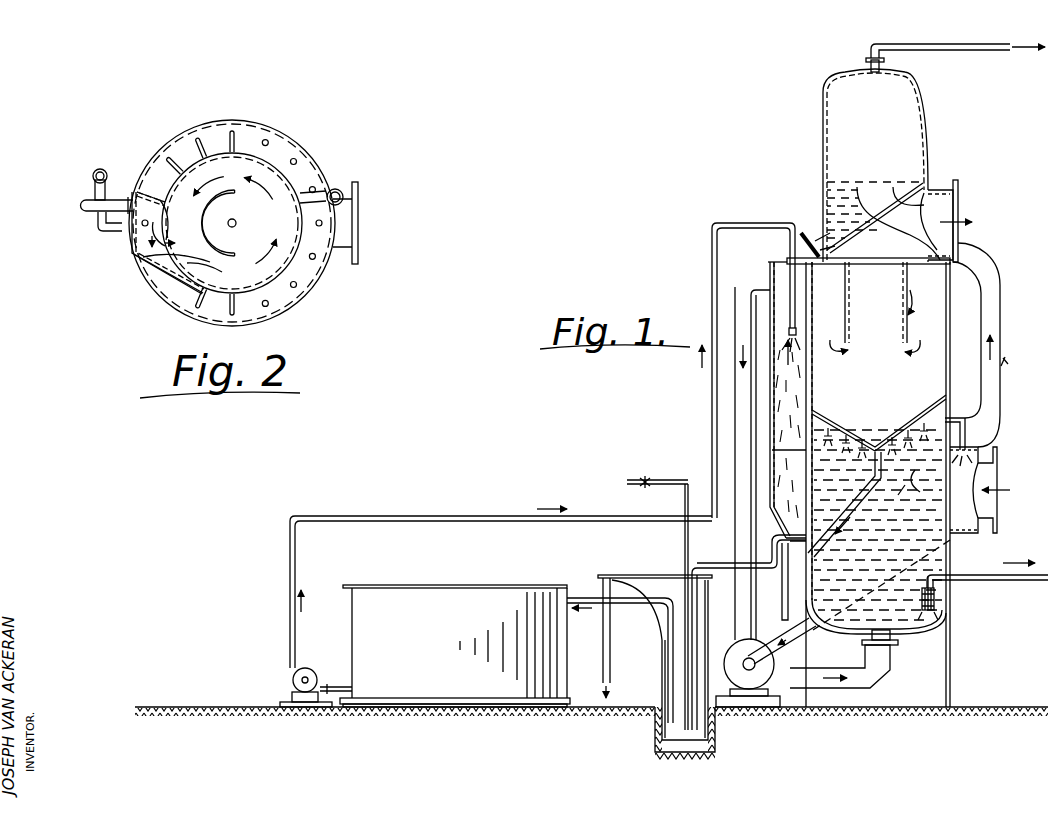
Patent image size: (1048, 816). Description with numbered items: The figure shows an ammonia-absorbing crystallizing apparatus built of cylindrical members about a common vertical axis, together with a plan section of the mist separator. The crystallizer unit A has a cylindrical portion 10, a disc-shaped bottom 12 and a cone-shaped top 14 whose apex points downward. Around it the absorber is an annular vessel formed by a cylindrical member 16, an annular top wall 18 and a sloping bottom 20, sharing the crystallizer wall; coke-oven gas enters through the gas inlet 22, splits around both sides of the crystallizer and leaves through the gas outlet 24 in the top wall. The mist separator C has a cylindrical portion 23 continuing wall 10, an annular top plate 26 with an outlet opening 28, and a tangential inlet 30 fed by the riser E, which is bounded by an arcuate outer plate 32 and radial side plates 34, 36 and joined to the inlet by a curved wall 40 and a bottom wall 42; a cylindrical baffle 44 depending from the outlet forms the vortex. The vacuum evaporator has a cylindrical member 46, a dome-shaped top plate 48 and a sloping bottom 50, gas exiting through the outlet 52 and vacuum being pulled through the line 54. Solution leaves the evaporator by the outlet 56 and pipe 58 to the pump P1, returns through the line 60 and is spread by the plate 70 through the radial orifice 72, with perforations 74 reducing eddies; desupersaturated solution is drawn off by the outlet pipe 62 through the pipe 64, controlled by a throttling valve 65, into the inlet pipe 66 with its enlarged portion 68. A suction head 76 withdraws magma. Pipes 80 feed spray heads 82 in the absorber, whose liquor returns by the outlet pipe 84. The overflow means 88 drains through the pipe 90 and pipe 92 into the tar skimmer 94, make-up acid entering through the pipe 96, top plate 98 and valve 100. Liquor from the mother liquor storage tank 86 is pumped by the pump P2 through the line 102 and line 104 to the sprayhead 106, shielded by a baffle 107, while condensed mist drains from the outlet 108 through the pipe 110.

In FIG. 1, the cylindrical portion 10 is at (936, 598).
In FIG. 1, the disc-shaped bottom 12 is at (950, 638).
In FIG. 1, the cone-shaped top 14 is at (847, 424).
In FIG. 1, the cylindrical member 16 is at (770, 480).
In FIG. 2, the annular top wall 18 is at (283, 145).
In FIG. 1, the annular top wall 18 is at (988, 447).
In FIG. 1, the sloping bottom 20 is at (822, 630).
In FIG. 2, the gas inlet 22 is at (345, 223).
In FIG. 1, the gas inlet 22 is at (985, 480).
In FIG. 1, the cylindrical portion 23 is at (944, 362).
In FIG. 2, the gas outlet 24 is at (143, 203).
In FIG. 1, the gas outlet 24 is at (800, 312).
In FIG. 1, the annular top plate 26 is at (878, 302).
In FIG. 1, the outlet opening 28 is at (1012, 580).
In FIG. 2, the tangential inlet 30 is at (205, 266).
In FIG. 2, the arcuate outer plate 32 is at (132, 236).
In FIG. 1, the arcuate outer plate 32 is at (788, 416).
In FIG. 2, the radial side plate 34 is at (162, 198).
In FIG. 2, the radial side plate 36 is at (168, 233).
In FIG. 2, the curved wall 40 is at (160, 278).
In FIG. 2, the bottom wall 42 is at (150, 256).
In FIG. 2, the cylindrical baffle 44 is at (222, 208).
In FIG. 1, the cylindrical baffle 44 is at (884, 351).
In FIG. 1, the cylindrical member 46 is at (930, 150).
In FIG. 1, the top plate 48 is at (845, 82).
In FIG. 1, the sloping bottom 50 is at (859, 250).
In FIG. 1, the outlet 52 is at (960, 205).
In FIG. 1, the line 54 is at (965, 50).
In FIG. 1, the outlet 56 is at (810, 240).
In FIG. 2, the pipe 58 is at (93, 173).
In FIG. 1, the pipe 58 is at (712, 396).
In FIG. 1, the line 60 is at (838, 690).
In FIG. 1, the outlet pipe 62 is at (935, 402).
In FIG. 1, the pipe 64 is at (1002, 303).
In FIG. 1, the throttling valve 65 is at (1003, 360).
In FIG. 1, the inlet pipe 66 is at (866, 186).
In FIG. 1, the enlarged portion 68 is at (897, 192).
In FIG. 1, the plate 70 is at (925, 626).
In FIG. 1, the radial orifice 72 is at (857, 625).
In FIG. 1, the perforations 74 is at (888, 648).
In FIG. 1, the suction head 76 is at (936, 606).
In FIG. 1, the pipes 80 is at (965, 418).
In FIG. 1, the spray heads 82 is at (917, 485).
In FIG. 1, the outlet pipe 84 is at (814, 561).
In FIG. 1, the mother liquor storage tank 86 is at (428, 593).
In FIG. 1, the overflow means 88 is at (772, 545).
In FIG. 1, the pipe 90 is at (726, 570).
In FIG. 1, the pipe 92 is at (690, 567).
In FIG. 1, the tar skimmer 94 is at (660, 643).
In FIG. 1, the pipe 96 is at (684, 528).
In FIG. 1, the top plate 98 is at (690, 560).
In FIG. 1, the valve 100 is at (647, 479).
In FIG. 1, the line 102 is at (350, 680).
In FIG. 1, the line 104 is at (452, 518).
In FIG. 1, the sprayhead 106 is at (797, 333).
In FIG. 1, the baffle 107 is at (706, 512).
In FIG. 1, the outlet 108 is at (882, 440).
In FIG. 1, the pipe 110 is at (780, 592).
In FIG. 2, the pump P1 is at (82, 207).
In FIG. 1, the pump P1 is at (735, 652).
In FIG. 1, the pump P2 is at (307, 669).
In FIG. 1, the crystallizer unit A is at (952, 568).
In FIG. 1, the mist precipitator unit C is at (942, 330).
In FIG. 1, the riser E is at (768, 290).